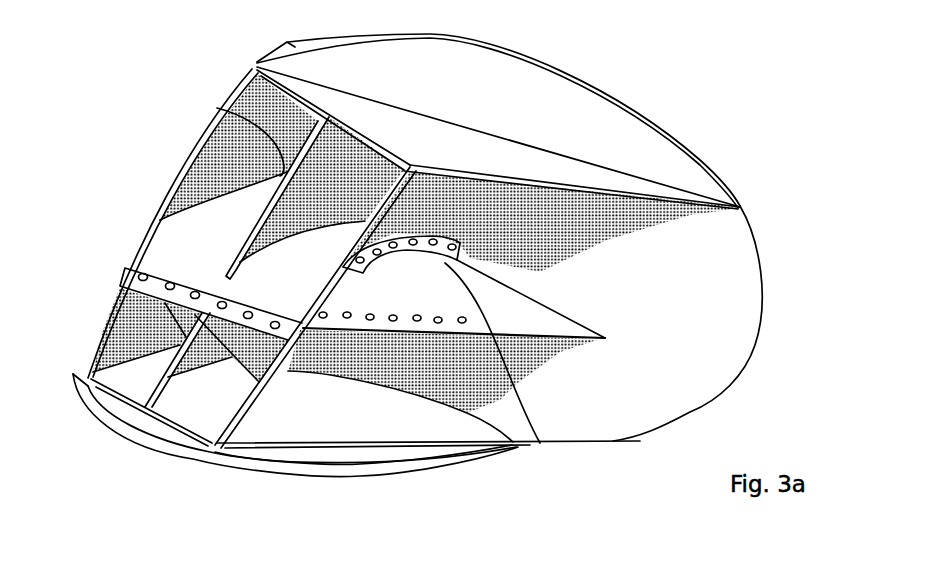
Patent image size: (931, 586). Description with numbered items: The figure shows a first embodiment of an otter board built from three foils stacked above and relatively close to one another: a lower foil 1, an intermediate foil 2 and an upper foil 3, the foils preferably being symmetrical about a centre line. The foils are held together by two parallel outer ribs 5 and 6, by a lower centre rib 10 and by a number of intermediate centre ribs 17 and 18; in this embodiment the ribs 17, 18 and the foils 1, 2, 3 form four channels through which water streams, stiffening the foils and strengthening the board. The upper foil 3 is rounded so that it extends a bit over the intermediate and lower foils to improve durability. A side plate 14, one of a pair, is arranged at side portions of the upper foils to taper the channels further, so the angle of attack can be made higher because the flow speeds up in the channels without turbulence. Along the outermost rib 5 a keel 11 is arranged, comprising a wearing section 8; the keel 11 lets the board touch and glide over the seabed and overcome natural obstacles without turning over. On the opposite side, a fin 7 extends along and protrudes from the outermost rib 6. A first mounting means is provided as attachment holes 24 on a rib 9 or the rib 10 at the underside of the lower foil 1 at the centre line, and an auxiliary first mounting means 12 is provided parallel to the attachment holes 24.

The lower foil 1 is at (717, 353).
The intermediate foil 2 is at (217, 108).
The upper foil 3 is at (196, 133).
The outer rib 5 is at (377, 410).
The outer rib 6 is at (643, 183).
The fin 7 is at (573, 127).
The wearing section 8 is at (123, 427).
The rib 9 is at (127, 264).
The lower centre rib 10 is at (557, 327).
The keel 11 is at (327, 453).
The auxiliary first mounting means 12 is at (532, 444).
The side plate 14 is at (158, 342).
The intermediate centre rib 17 is at (310, 247).
The intermediate centre rib 18 is at (213, 242).
The attachment holes 24 is at (438, 322).